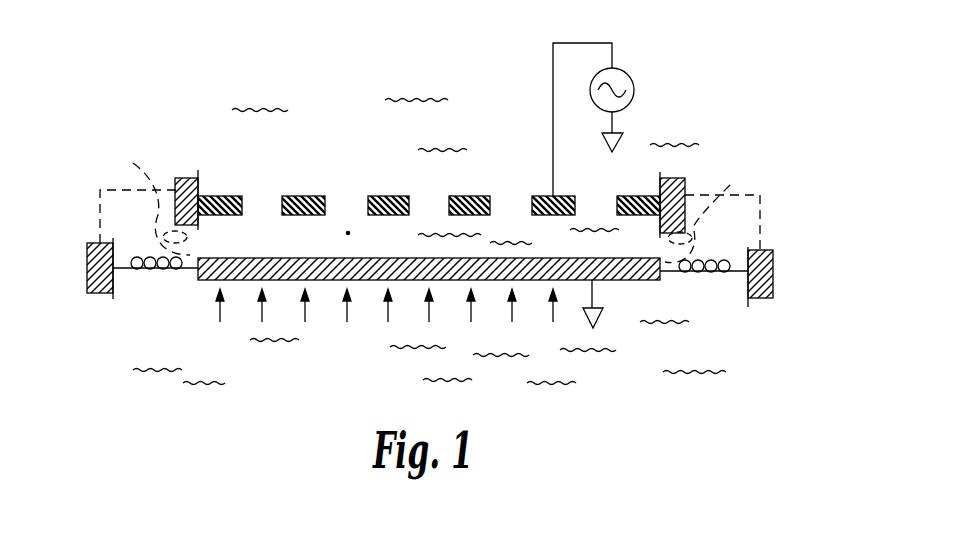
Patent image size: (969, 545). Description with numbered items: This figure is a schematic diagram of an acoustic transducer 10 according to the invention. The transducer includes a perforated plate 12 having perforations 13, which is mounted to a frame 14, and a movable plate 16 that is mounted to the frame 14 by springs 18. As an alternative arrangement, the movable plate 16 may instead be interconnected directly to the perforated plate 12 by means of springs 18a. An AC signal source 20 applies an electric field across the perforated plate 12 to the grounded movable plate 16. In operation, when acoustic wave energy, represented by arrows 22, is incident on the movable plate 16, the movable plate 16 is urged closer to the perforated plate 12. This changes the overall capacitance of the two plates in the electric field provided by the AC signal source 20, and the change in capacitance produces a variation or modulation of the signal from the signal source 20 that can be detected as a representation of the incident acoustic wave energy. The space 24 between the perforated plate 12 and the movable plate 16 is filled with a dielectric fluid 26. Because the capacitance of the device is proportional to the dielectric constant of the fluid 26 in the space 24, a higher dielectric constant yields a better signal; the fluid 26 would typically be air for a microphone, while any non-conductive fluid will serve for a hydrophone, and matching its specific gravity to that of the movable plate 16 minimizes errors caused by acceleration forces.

The acoustic transducer 10 is at (352, 40).
The perforated plate 12 is at (226, 194).
The perforations 13 is at (427, 202).
The frame 14 is at (185, 178).
The movable plate 16 is at (206, 281).
The springs 18 is at (160, 272).
The springs 18a is at (428, 207).
The AC signal source 20 is at (629, 72).
The arrows 22 is at (388, 318).
The space 24 is at (348, 233).
The dielectric fluid 26 is at (508, 240).